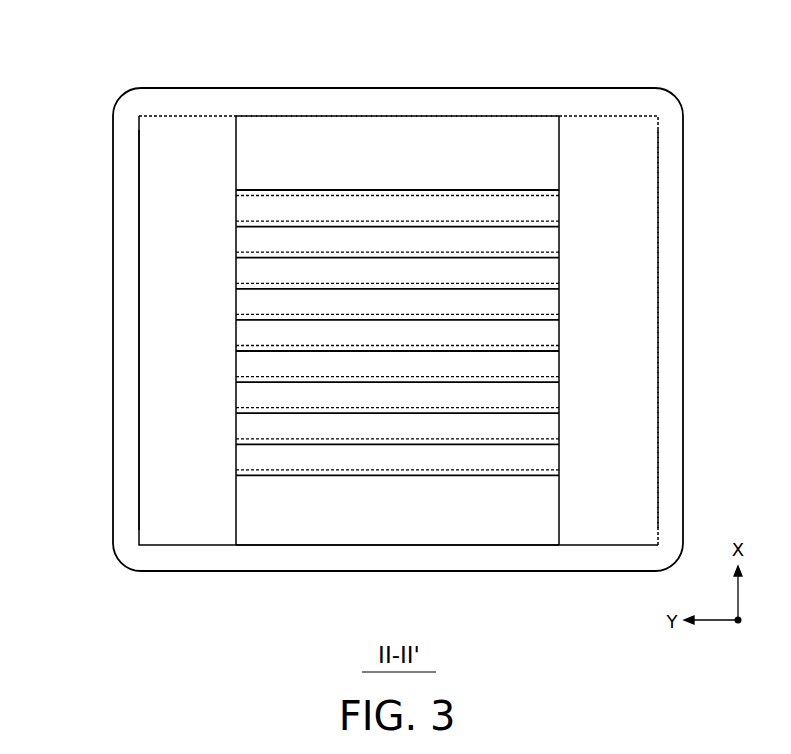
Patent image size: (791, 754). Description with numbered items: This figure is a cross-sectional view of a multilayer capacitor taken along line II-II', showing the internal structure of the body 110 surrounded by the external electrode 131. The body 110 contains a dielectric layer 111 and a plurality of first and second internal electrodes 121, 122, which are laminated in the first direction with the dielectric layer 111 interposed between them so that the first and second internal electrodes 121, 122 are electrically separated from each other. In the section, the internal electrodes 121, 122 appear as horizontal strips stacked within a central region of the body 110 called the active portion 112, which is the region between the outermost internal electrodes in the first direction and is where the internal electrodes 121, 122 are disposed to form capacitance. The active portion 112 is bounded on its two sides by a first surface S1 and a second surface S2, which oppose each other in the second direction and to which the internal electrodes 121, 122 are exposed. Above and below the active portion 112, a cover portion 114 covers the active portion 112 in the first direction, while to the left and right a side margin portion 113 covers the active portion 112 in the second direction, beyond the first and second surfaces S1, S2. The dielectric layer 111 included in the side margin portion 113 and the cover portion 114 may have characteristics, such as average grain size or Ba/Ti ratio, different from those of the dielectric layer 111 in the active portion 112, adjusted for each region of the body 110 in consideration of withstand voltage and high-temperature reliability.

The body 110 is at (341, 115).
The dielectric layer 111 is at (528, 209).
The active portion 112 is at (240, 293).
The side margin portion 113 is at (183, 172).
The cover portion 114 is at (492, 145).
The first internal electrode 121 is at (290, 190).
The second internal electrode 122 is at (406, 226).
The external electrode 131 is at (582, 103).
The first surface S1 is at (237, 323).
The second surface S2 is at (561, 323).